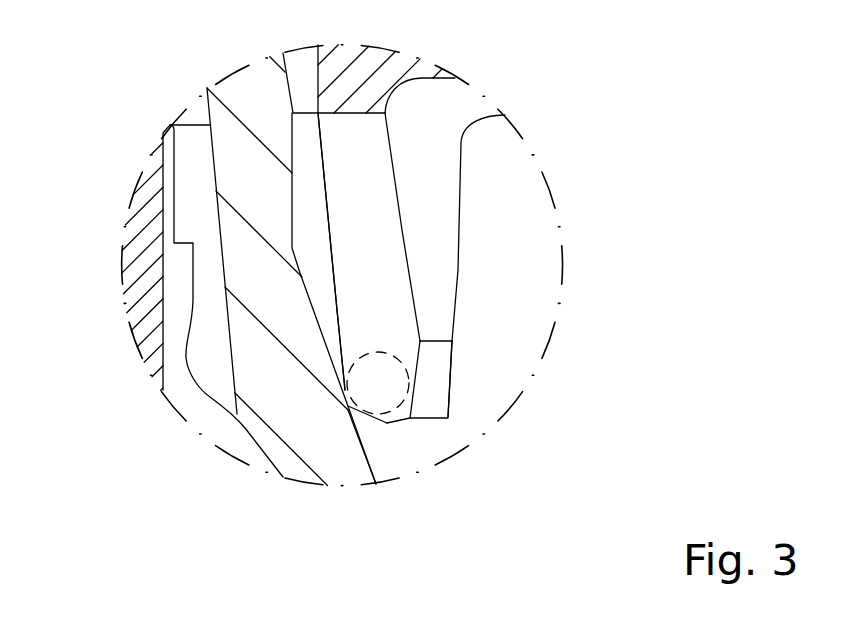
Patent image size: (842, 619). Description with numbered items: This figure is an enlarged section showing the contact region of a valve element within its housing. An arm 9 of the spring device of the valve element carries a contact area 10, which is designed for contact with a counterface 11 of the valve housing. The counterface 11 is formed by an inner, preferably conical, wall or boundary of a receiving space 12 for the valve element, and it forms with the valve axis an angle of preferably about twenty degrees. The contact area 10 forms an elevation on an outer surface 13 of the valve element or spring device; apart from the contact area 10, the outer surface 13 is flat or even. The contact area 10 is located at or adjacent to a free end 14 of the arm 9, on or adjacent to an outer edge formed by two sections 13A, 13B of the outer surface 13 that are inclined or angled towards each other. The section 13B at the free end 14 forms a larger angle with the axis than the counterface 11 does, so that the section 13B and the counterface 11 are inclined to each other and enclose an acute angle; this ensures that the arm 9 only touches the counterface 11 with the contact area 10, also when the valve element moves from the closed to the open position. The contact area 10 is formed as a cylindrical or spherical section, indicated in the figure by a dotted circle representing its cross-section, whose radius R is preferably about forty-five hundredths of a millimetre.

The arm 9 is at (440, 288).
The contact area 10 is at (340, 393).
The counterface 11 is at (368, 457).
The receiving space 12 is at (497, 353).
The outer surface 13 is at (332, 280).
The first section of the outer surface 13A is at (333, 328).
The second section of the outer surface 13B is at (365, 412).
The free end 14 is at (433, 397).
The radius R is at (345, 382).